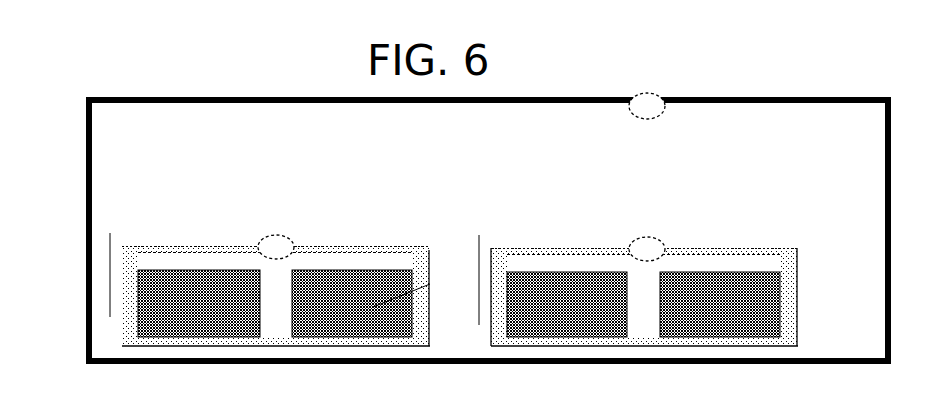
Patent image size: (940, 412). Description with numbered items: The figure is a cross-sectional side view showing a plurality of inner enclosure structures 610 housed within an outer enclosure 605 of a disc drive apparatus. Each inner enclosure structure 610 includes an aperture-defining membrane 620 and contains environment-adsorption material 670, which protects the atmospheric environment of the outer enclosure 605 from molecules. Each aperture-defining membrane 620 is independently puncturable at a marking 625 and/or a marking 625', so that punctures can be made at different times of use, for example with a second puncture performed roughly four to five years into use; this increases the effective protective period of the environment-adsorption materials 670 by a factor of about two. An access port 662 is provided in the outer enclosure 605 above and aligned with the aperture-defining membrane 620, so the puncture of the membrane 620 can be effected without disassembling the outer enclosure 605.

The outer enclosure 605 is at (168, 95).
The access port 662 is at (665, 92).
The inner enclosure structure 610 is at (432, 318).
The aperture-defining membrane 620 is at (160, 251).
The marking 625 is at (685, 216).
The marking 625' is at (316, 218).
The environment-adsorption material 670 is at (372, 307).